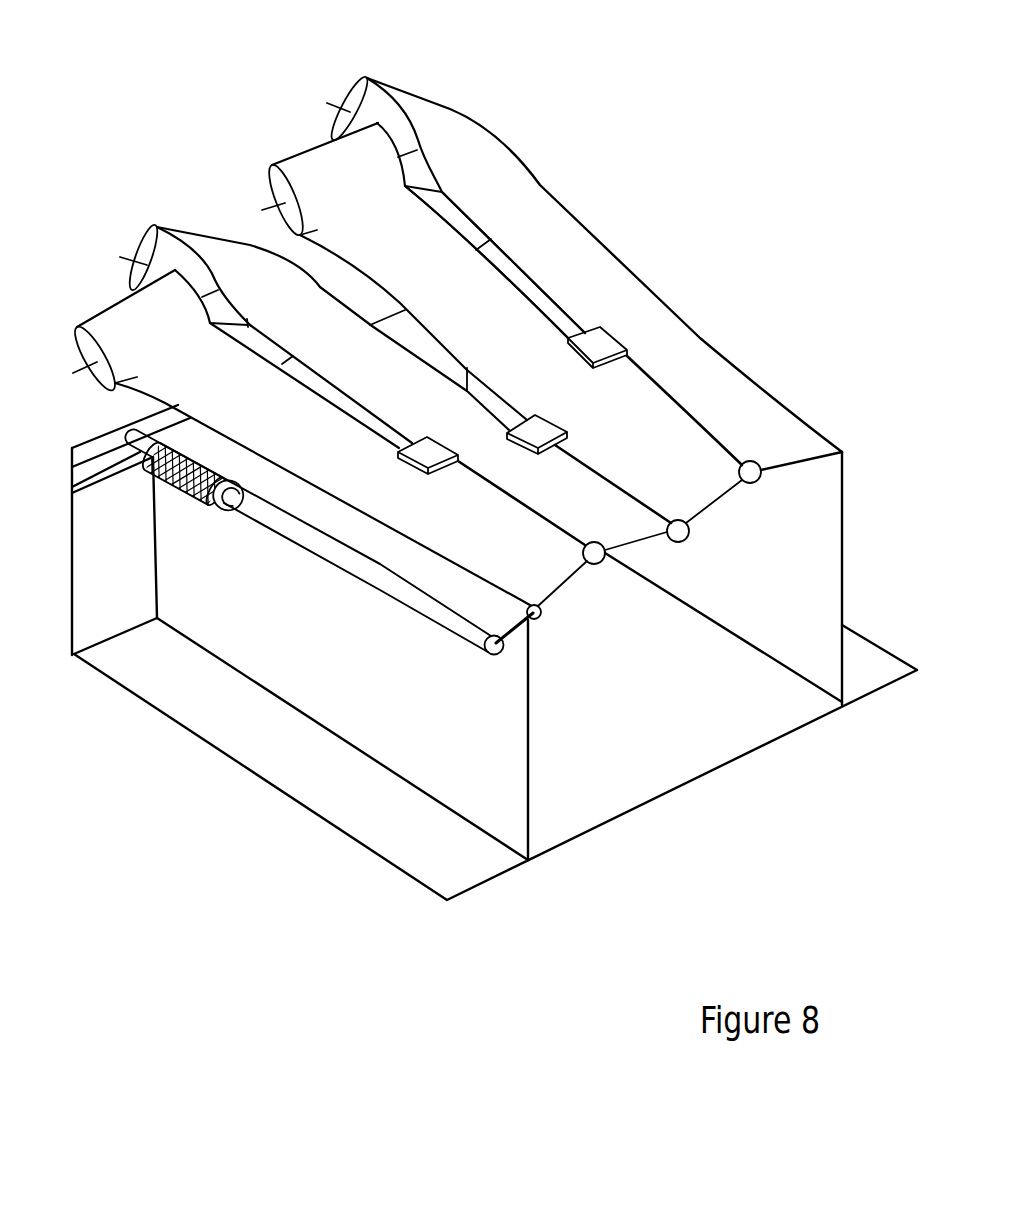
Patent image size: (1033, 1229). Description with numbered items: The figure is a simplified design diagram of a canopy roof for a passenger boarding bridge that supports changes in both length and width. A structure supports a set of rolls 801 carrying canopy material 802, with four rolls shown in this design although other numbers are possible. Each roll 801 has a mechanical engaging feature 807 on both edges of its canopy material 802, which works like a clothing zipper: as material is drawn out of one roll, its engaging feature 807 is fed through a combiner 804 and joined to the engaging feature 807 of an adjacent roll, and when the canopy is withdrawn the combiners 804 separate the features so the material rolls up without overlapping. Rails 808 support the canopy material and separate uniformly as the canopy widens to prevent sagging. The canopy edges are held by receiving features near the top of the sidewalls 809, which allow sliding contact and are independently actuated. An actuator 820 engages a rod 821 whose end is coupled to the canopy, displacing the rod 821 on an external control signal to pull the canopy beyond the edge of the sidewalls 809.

The rolls 801 is at (375, 110).
The canopy material 802 is at (322, 168).
The mechanical engaging feature 807 is at (473, 262).
The combiner 804 is at (593, 347).
The rails 808 is at (605, 560).
The sidewalls 809 is at (785, 488).
The actuator 820 is at (183, 500).
The rod 821 is at (486, 647).